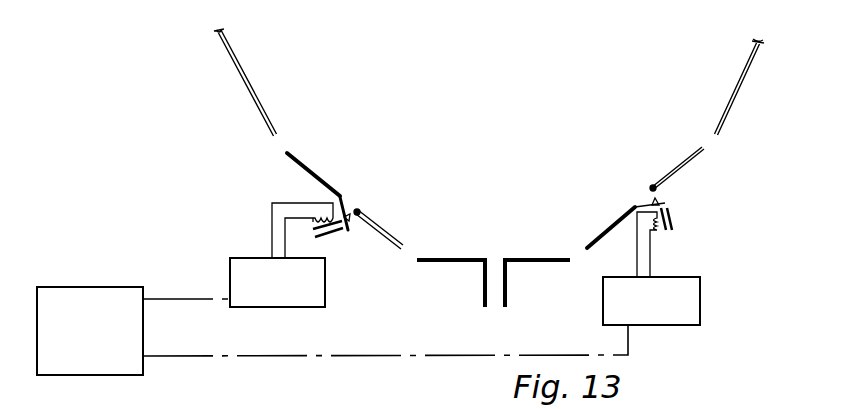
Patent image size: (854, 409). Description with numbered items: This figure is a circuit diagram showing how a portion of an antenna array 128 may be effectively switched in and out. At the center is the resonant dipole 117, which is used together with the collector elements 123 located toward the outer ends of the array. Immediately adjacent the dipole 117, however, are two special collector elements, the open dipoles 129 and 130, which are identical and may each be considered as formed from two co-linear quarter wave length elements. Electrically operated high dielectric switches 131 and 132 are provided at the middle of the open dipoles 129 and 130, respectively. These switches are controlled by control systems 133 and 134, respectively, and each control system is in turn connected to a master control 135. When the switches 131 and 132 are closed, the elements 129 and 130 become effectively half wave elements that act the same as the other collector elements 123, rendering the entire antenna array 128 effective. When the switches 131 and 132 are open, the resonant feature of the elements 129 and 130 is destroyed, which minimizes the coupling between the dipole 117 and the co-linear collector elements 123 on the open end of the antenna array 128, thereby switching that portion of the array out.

The resonant dipole 117 is at (515, 260).
The collector elements 123 is at (247, 73).
The antenna array 128 is at (727, 110).
The open dipole 129 is at (317, 177).
The open dipole 130 is at (683, 160).
The electrically operated high dielectric switch 131 is at (352, 220).
The electrically operated high dielectric switch 132 is at (657, 190).
The control system 133 is at (325, 297).
The control system 134 is at (700, 298).
The master control 135 is at (111, 287).